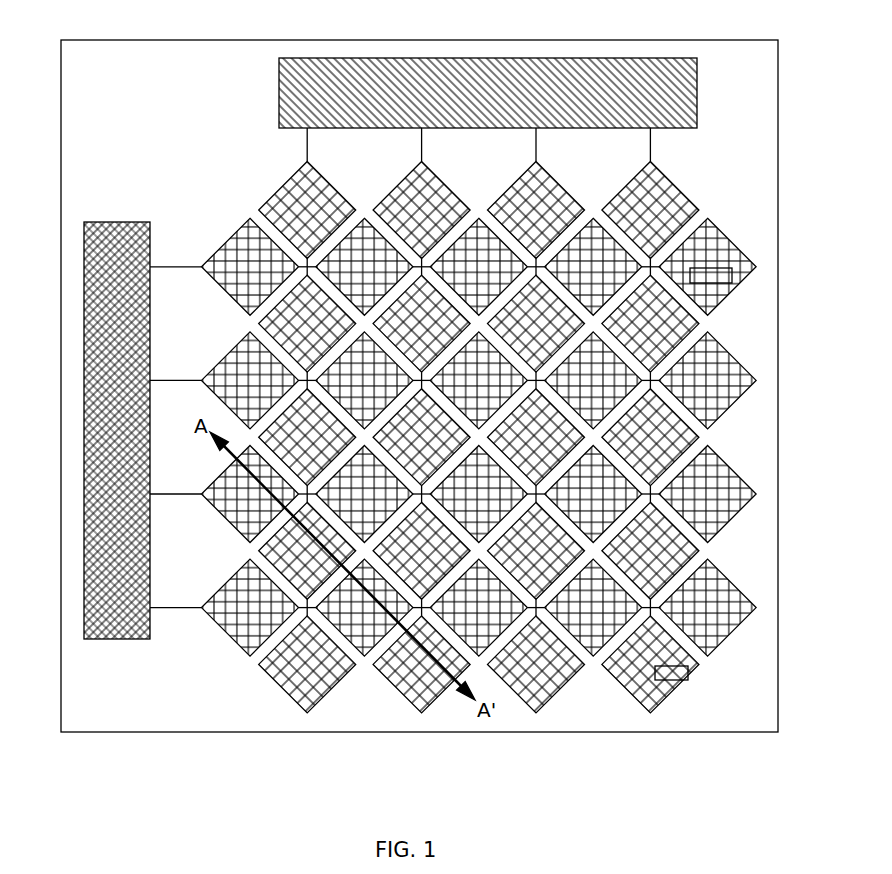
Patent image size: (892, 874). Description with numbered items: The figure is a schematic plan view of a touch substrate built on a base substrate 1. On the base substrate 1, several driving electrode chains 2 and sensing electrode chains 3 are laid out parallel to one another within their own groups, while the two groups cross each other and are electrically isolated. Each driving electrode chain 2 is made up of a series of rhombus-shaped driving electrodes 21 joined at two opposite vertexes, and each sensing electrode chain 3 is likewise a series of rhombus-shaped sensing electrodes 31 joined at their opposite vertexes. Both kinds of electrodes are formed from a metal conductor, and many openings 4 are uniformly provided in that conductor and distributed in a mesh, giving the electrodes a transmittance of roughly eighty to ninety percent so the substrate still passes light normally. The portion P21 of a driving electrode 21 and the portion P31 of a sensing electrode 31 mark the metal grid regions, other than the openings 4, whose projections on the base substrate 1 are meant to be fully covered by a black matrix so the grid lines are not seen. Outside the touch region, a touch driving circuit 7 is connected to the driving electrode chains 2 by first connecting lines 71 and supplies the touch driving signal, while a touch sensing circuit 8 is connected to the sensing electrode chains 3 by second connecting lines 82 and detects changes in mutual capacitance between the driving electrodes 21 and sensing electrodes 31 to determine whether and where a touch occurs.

The base substrate 1 is at (760, 152).
The driving electrode chain 2 is at (522, 437).
The driving electrode 21 is at (750, 277).
The portion of driving electrode P21 is at (717, 305).
The sensing electrode chain 3 is at (514, 478).
The sensing electrode 31 is at (685, 703).
The portion of sensing electrode P31 is at (685, 677).
The opening 4 is at (522, 478).
The touch driving circuit 7 is at (105, 267).
The first connecting line 71 is at (181, 260).
The touch sensing circuit 8 is at (655, 78).
The second connecting line 82 is at (303, 147).